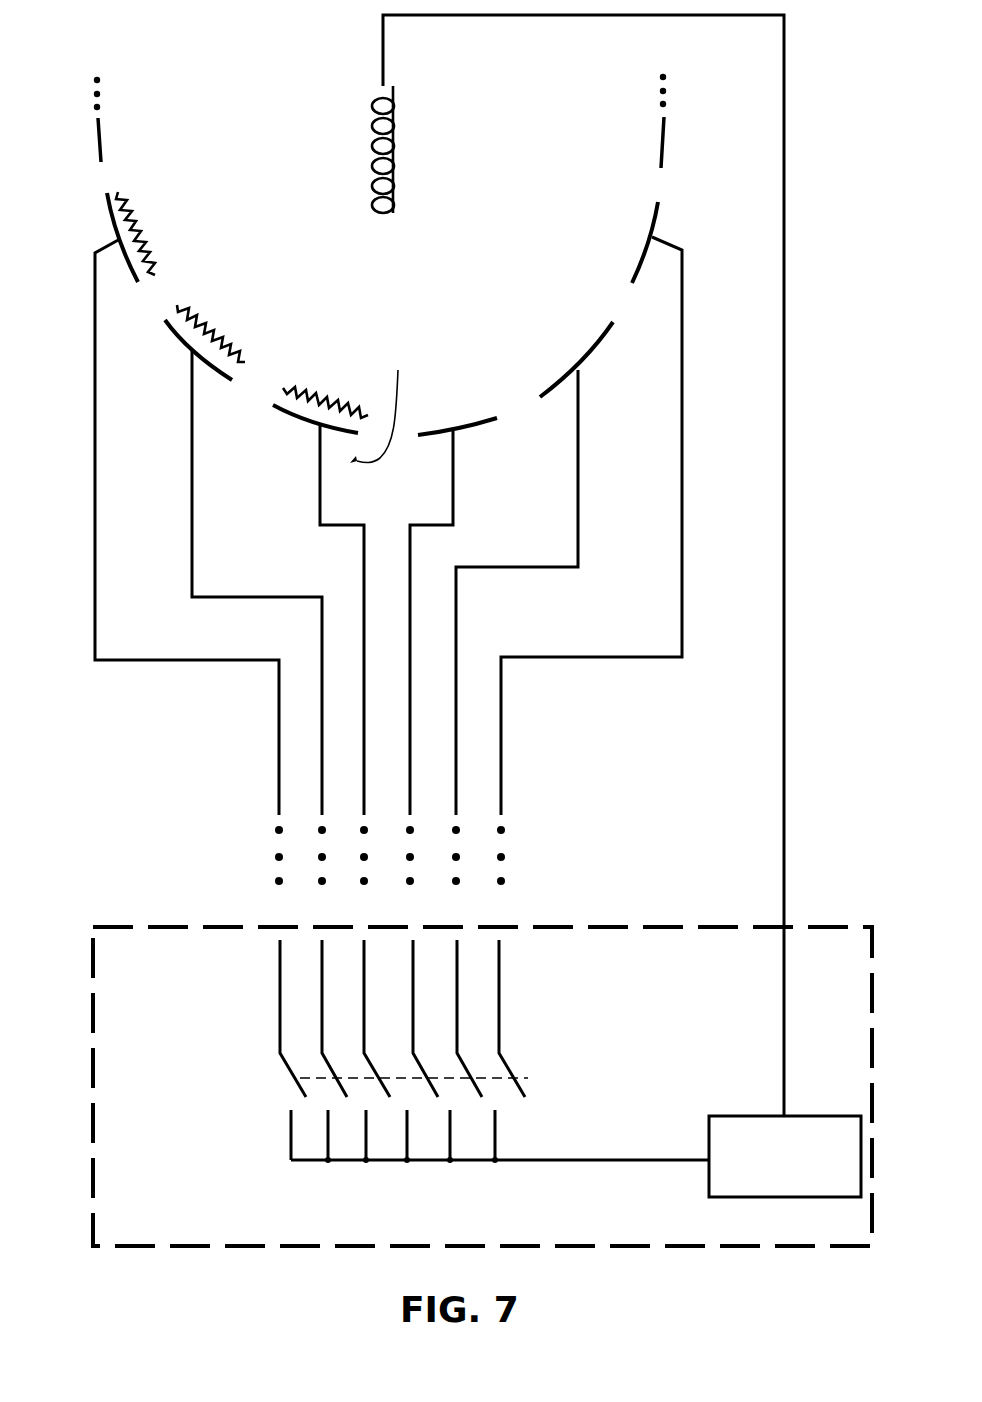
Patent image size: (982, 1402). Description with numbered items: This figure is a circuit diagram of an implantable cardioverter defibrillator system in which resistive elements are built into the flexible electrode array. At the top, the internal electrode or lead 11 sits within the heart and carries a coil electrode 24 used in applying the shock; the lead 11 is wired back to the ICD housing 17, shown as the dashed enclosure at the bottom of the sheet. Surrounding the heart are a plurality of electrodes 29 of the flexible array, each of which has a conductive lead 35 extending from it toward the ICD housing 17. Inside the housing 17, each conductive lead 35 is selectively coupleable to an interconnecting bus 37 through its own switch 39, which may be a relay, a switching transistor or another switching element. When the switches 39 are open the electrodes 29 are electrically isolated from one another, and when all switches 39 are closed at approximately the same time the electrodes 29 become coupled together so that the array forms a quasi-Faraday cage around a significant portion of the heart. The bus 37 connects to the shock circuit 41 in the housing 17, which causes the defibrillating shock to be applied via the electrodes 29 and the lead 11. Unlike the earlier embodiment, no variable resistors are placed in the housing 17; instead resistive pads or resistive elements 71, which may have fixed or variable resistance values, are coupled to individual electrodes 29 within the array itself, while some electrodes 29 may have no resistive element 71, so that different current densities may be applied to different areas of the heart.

The internal electrode or lead 11 is at (432, 176).
The ICD housing 17 is at (617, 926).
The coil electrode 24 is at (372, 180).
The electrodes 29 is at (127, 263).
The conductive lead 35 is at (95, 448).
The interconnecting bus 37 is at (528, 1160).
The switch 39 is at (318, 1072).
The shock circuit 41 is at (707, 1133).
The resistive pads or resistive elements 71 is at (140, 238).